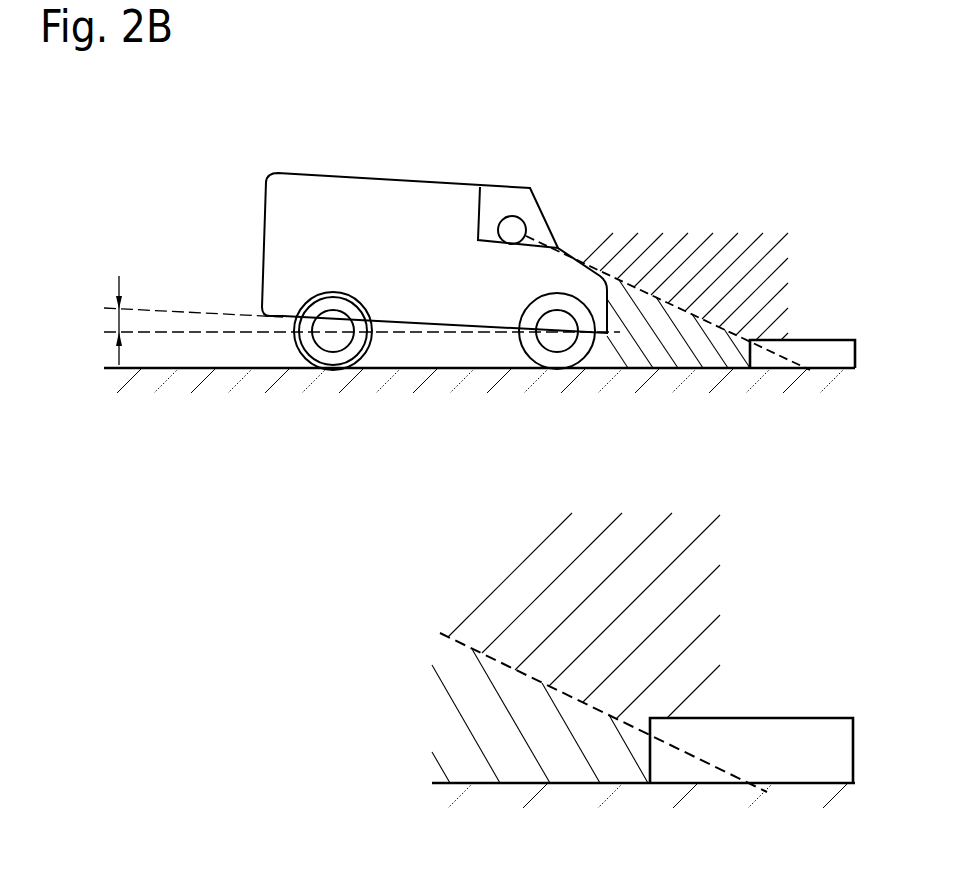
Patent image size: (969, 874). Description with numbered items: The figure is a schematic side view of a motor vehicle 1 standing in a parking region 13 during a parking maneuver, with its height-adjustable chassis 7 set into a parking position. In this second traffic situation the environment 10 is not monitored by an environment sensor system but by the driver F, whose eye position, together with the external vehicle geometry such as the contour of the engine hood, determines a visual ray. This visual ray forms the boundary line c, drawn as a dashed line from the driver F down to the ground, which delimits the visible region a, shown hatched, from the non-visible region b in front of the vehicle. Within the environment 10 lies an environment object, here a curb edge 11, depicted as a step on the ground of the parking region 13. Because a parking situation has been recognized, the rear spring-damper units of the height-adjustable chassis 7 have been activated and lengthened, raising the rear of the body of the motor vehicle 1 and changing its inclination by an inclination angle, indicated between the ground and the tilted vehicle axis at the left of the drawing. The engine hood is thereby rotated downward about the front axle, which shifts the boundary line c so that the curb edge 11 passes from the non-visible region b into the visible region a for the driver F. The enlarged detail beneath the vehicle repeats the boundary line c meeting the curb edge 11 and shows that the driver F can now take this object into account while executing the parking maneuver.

The motor vehicle 1 is at (203, 136).
The height-adjustable chassis 7 is at (330, 290).
The environment 10 is at (780, 147).
The parking region 13 is at (184, 374).
The curb edge 11 is at (653, 722).
The driver F is at (506, 216).
The visible region a is at (720, 272).
The non-visible region b is at (718, 334).
The boundary line c is at (741, 328).